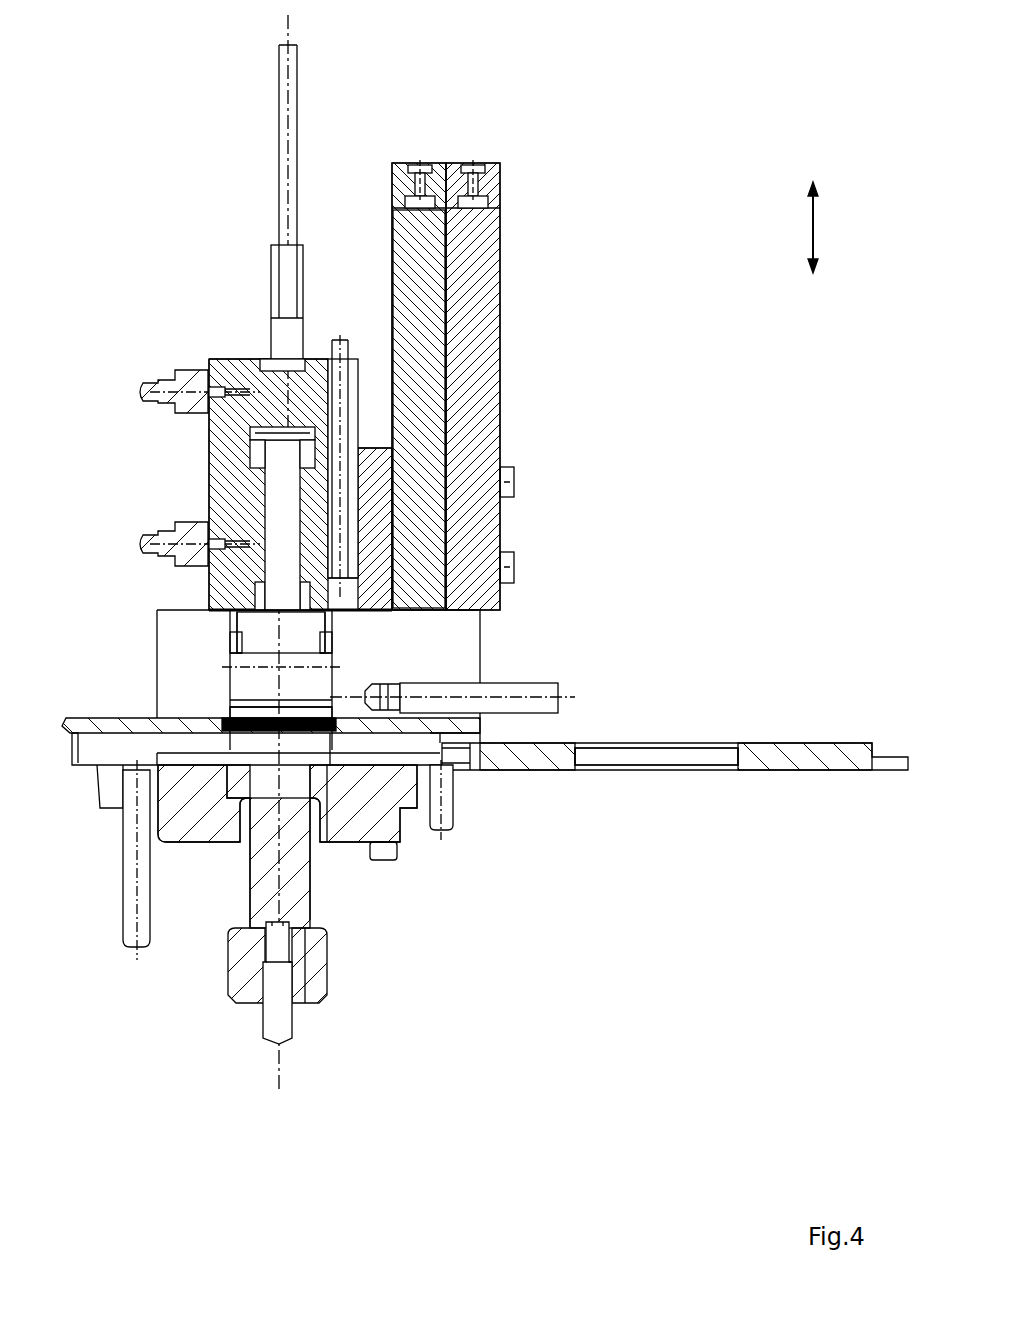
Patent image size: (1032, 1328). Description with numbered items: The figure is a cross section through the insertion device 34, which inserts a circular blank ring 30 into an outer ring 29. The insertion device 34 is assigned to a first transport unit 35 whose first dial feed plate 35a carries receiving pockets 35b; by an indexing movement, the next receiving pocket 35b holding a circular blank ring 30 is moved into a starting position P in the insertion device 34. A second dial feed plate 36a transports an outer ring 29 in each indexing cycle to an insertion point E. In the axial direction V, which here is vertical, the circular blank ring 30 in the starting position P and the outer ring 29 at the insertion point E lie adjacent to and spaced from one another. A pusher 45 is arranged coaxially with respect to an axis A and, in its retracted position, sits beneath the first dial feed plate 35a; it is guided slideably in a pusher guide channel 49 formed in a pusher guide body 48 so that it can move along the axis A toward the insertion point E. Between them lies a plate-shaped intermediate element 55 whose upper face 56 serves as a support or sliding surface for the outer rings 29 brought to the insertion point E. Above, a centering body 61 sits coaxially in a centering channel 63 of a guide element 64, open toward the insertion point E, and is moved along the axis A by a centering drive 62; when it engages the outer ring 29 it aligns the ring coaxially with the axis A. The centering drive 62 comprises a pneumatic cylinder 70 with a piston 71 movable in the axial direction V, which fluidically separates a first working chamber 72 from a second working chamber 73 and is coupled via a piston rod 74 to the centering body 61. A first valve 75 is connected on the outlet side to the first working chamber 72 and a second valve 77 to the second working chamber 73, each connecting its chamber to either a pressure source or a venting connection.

The insertion device 34 is at (500, 306).
The centering drive 62 is at (219, 327).
The second valve 77 is at (478, 275).
The first valve 75 is at (430, 325).
The first working chamber 72 is at (258, 436).
The piston 71 is at (258, 460).
The second working chamber 73 is at (255, 457).
The pneumatic cylinder 70 is at (210, 490).
The piston rod 74 is at (268, 516).
The centering body 61 is at (255, 636).
The centering channel 63 is at (333, 634).
The guide element 64 is at (460, 650).
The insertion point E is at (345, 705).
The outer ring 29 is at (220, 720).
The second dial feed plate 36a is at (123, 725).
The upper face 56 is at (410, 735).
The first transport unit 35 is at (820, 733).
The first dial feed plate 35a is at (553, 760).
The receiving pocket 35b is at (337, 760).
The circular blank ring 30 is at (323, 753).
The intermediate element 55 is at (125, 748).
The starting position P is at (227, 783).
The pusher guide body 48 is at (193, 827).
The pusher guide channel 49 is at (240, 830).
The pusher 45 is at (243, 952).
The axis A is at (277, 1058).
The axial direction V is at (812, 229).